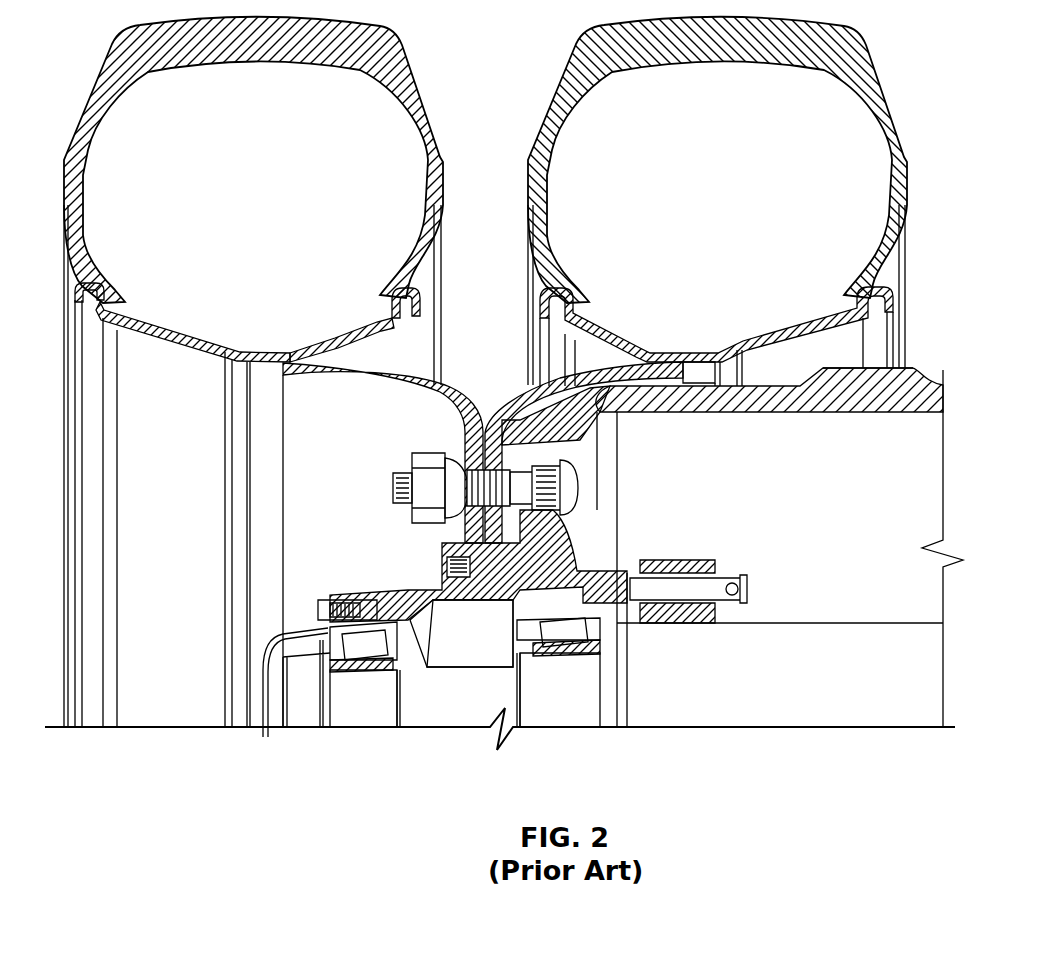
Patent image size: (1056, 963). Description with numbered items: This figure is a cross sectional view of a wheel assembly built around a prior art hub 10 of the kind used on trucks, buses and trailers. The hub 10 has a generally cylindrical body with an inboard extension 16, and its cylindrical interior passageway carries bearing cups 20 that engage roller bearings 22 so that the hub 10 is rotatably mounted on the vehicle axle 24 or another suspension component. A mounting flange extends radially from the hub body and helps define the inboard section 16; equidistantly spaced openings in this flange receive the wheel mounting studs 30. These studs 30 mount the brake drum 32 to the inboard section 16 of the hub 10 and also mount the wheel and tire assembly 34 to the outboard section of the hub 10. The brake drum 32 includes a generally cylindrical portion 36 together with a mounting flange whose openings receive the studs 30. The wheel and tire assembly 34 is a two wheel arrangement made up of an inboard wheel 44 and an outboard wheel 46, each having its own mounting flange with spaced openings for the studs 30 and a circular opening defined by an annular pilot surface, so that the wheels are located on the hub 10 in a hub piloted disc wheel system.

The hub 10 is at (580, 562).
The inboard extension 16 is at (503, 653).
The bearing cups 20 is at (412, 640).
The roller bearing 22 is at (338, 662).
The vehicle axle 24 is at (878, 623).
The wheel mounting studs 30 is at (570, 492).
The brake drum 32 is at (819, 534).
The wheel and tire assembly 34 is at (452, 284).
The cylindrical portion 36 is at (913, 373).
The inboard wheel 44 is at (522, 383).
The outboard wheel 46 is at (448, 390).